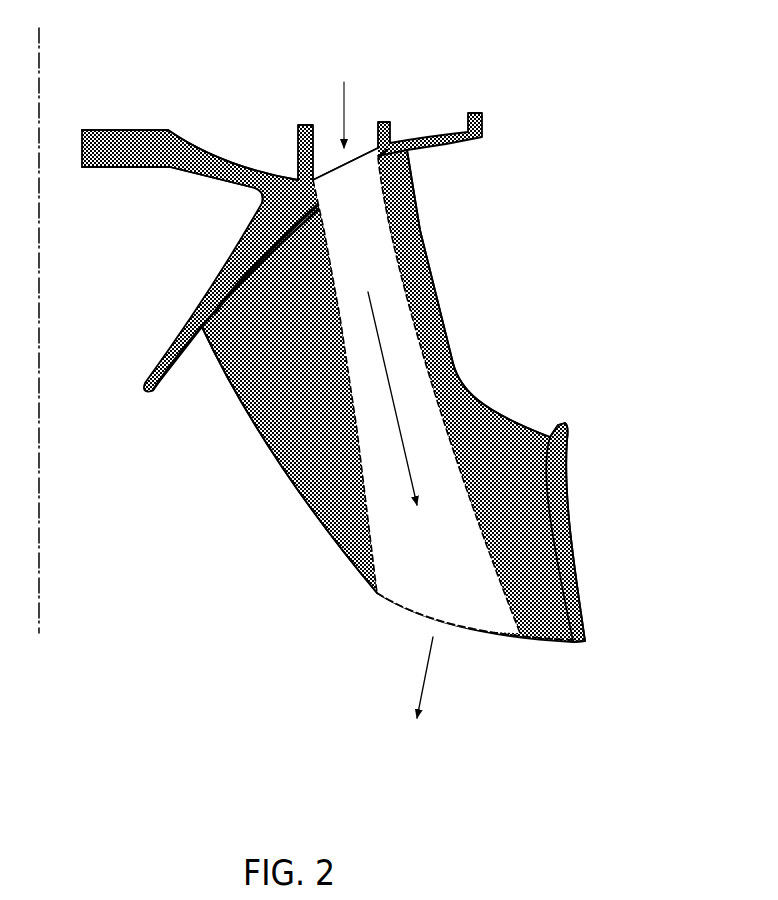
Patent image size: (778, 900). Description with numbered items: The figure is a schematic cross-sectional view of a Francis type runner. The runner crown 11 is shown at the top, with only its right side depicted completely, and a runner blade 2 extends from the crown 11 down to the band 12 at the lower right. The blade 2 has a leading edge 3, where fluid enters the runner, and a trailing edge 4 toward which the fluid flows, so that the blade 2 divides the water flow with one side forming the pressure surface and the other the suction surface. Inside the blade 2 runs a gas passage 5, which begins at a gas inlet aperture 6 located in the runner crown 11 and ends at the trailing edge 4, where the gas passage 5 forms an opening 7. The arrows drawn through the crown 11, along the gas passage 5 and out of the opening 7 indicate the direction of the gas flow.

The runner blade 2 is at (270, 372).
The leading edge 3 is at (460, 370).
The trailing edge 4 is at (313, 523).
The gas passage 5 is at (457, 582).
The gas inlet aperture 6 is at (340, 162).
The opening 7 is at (397, 610).
The runner crown 11 is at (292, 197).
The band 12 is at (565, 552).